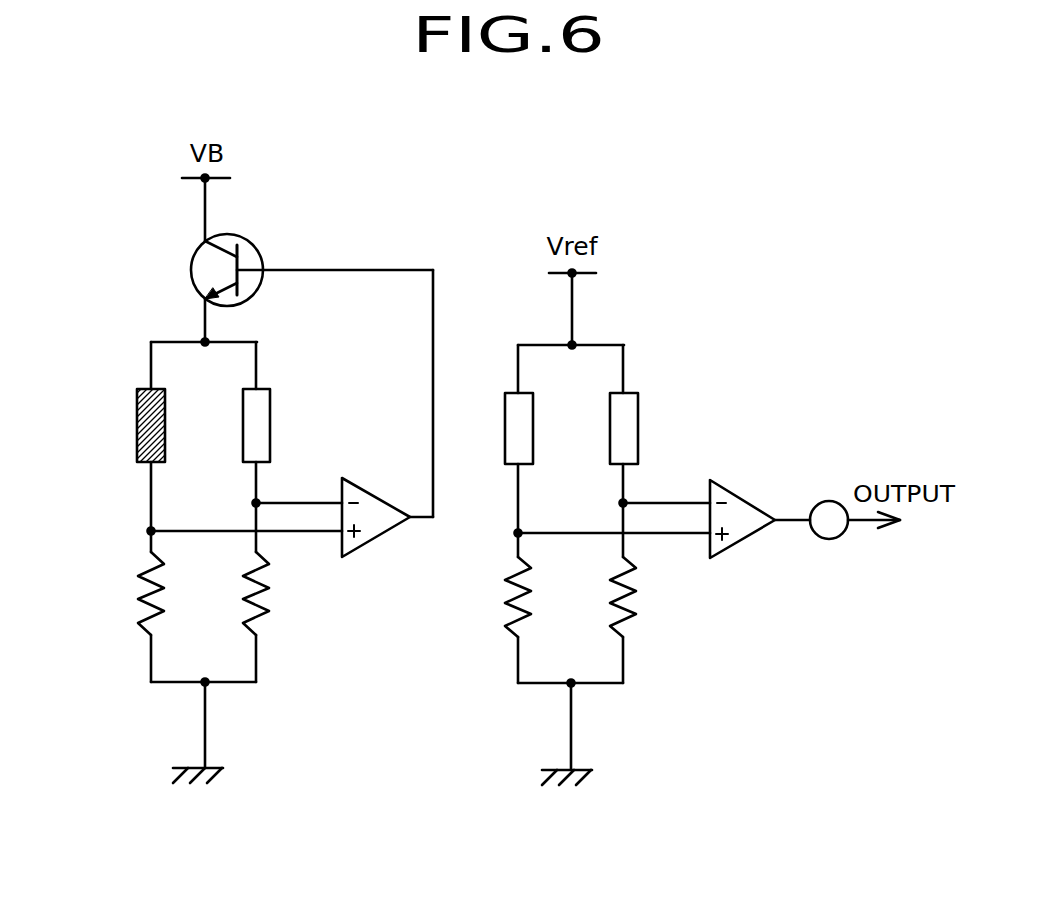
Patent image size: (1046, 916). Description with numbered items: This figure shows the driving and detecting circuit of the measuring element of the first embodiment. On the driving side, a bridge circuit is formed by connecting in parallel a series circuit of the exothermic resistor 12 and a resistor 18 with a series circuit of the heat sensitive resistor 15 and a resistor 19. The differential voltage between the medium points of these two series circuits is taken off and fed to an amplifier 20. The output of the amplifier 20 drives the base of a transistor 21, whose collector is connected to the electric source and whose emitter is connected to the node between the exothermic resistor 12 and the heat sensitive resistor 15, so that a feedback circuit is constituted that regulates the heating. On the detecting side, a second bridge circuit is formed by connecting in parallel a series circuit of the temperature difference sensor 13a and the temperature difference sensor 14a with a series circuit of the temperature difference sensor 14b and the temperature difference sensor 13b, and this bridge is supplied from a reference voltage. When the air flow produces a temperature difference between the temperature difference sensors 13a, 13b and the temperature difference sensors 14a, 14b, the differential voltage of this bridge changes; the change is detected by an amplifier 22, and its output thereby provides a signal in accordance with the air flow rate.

The exothermic resistor 12 is at (137, 412).
The heat sensitive resistor 15 is at (270, 412).
The resistor 18 is at (138, 605).
The resistor 19 is at (268, 606).
The amplifier 20 is at (378, 538).
The transistor 21 is at (260, 248).
The temperature difference sensor 13a is at (510, 420).
The temperature difference sensor 13b is at (632, 606).
The temperature difference sensor 14a is at (505, 605).
The temperature difference sensor 14b is at (638, 412).
The amplifier 22 is at (747, 540).